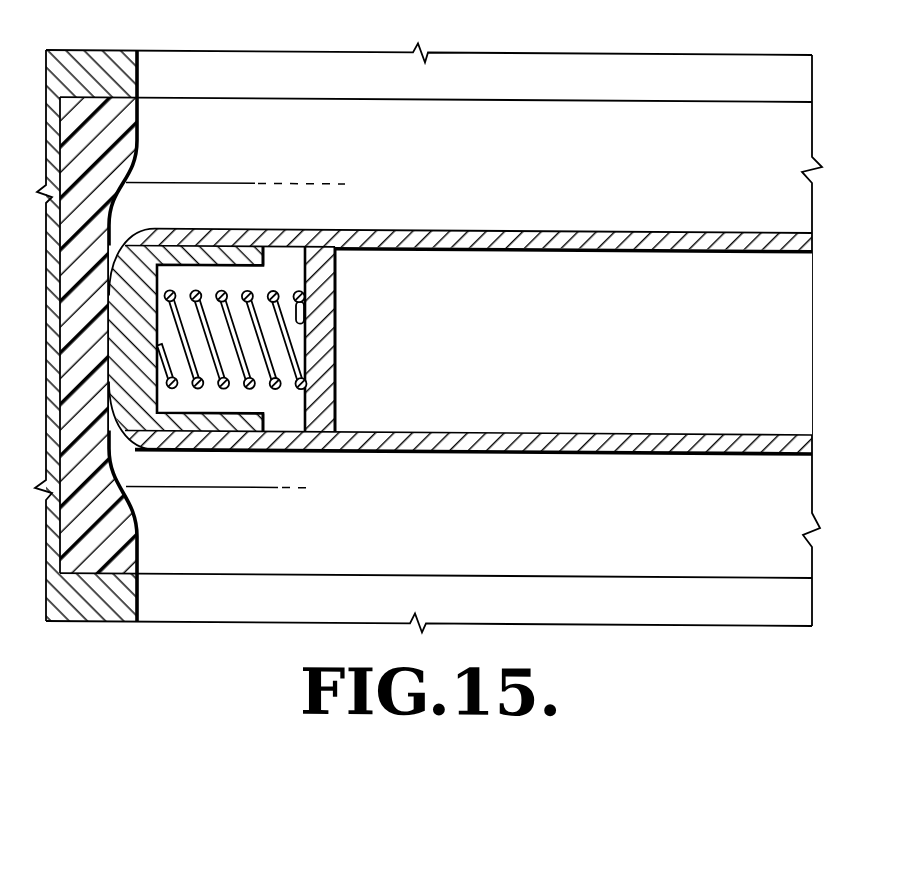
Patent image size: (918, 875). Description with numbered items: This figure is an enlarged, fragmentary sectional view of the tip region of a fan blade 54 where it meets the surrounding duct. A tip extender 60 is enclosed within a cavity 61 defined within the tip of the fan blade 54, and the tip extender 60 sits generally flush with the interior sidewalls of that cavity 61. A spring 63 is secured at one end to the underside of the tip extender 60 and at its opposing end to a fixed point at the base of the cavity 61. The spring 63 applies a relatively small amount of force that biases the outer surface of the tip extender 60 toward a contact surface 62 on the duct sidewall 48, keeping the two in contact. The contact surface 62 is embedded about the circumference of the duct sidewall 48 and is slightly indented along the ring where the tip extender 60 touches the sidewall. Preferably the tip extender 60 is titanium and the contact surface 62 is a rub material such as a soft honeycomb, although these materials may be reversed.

The duct sidewall 48 is at (111, 49).
The contact surface 62 is at (134, 114).
The fan blade 54 is at (525, 229).
The tip extender 60 is at (211, 257).
The cavity 61 is at (294, 249).
The spring 63 is at (292, 354).